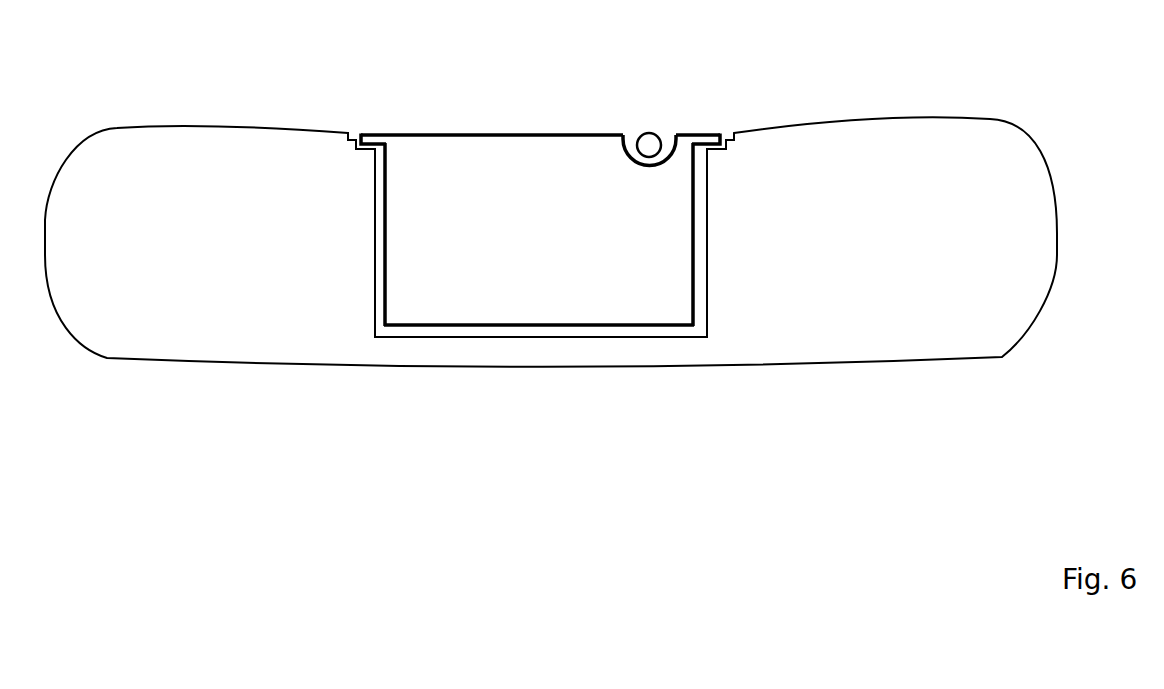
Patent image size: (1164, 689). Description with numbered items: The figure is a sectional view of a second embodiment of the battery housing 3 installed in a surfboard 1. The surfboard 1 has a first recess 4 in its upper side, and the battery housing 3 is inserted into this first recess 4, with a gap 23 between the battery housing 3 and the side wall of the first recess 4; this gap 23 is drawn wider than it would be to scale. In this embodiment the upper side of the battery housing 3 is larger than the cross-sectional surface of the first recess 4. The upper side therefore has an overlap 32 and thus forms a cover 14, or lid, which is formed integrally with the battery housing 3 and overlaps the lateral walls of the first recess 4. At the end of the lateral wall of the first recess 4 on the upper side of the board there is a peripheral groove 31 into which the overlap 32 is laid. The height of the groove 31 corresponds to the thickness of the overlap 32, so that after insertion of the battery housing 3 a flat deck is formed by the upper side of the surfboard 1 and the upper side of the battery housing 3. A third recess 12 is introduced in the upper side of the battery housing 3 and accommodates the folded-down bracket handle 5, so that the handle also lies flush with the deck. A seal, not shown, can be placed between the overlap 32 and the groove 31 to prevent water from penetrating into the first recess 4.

The surfboard 1 is at (853, 308).
The battery housing 3 is at (551, 230).
The first recess 4 is at (492, 330).
The bracket handle 5 is at (650, 146).
The third recess 12 is at (632, 125).
The cover 14 is at (460, 126).
The gap 23 is at (707, 297).
The peripheral groove 31 is at (355, 133).
The overlap 32 is at (375, 133).